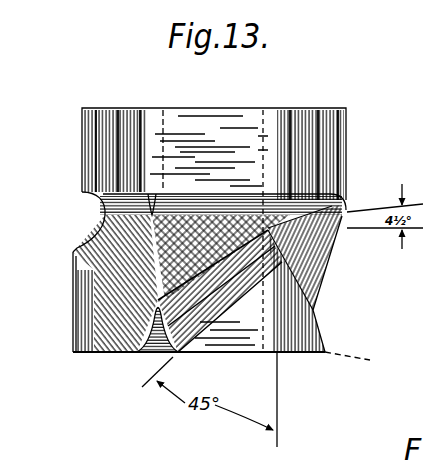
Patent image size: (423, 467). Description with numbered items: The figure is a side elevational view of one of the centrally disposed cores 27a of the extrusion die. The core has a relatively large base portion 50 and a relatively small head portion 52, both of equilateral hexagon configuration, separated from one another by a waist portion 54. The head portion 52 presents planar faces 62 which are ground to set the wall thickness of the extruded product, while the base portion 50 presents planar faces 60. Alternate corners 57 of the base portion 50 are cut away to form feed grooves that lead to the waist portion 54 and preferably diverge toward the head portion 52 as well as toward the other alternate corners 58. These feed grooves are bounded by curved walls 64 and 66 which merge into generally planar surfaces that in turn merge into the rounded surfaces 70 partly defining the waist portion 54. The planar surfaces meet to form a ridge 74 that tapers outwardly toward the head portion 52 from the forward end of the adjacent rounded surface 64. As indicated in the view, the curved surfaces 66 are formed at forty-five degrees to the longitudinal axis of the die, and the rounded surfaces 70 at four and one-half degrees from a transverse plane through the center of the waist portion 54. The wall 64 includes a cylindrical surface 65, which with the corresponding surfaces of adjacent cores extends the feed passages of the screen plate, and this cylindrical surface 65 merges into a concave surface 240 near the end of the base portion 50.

The centrally disposed core 27a is at (78, 130).
The planar faces of the head portion 62 is at (125, 124).
The head portion 52 is at (250, 118).
The alternate corners of the base portion 57 is at (147, 133).
The rounded surfaces 70 is at (107, 206).
The waist portion 54 is at (100, 216).
The curved walls of the feed grooves 66 is at (117, 294).
The other alternate corners 58 is at (73, 282).
The planar faces of the base portion 60 is at (86, 330).
The base portion 50 is at (90, 352).
The curved walls of the feed grooves 64 is at (150, 346).
The ridge 74 is at (333, 260).
The concave surface 240 is at (316, 311).
The cylindrical surface 65 is at (360, 358).